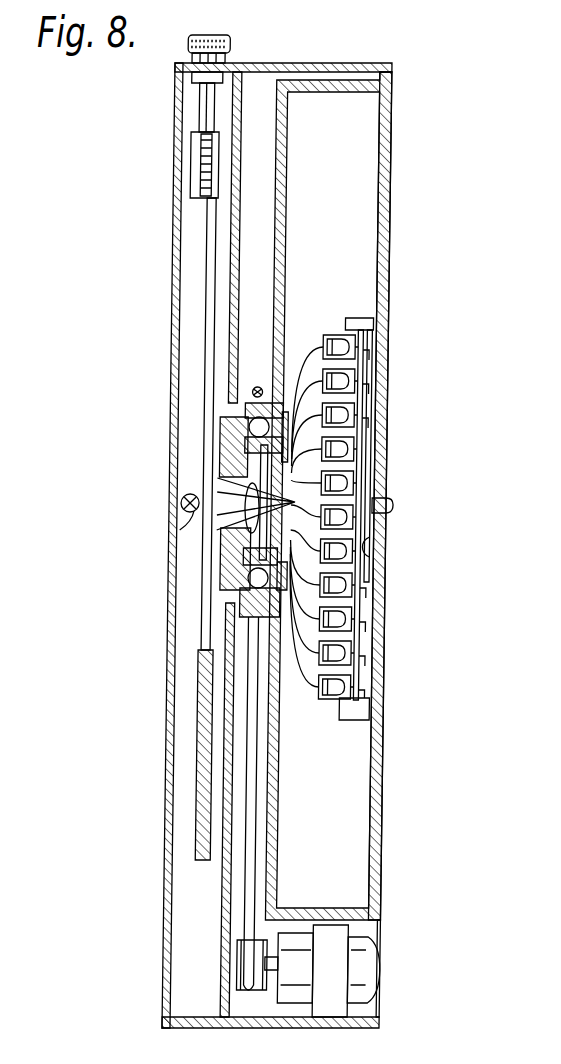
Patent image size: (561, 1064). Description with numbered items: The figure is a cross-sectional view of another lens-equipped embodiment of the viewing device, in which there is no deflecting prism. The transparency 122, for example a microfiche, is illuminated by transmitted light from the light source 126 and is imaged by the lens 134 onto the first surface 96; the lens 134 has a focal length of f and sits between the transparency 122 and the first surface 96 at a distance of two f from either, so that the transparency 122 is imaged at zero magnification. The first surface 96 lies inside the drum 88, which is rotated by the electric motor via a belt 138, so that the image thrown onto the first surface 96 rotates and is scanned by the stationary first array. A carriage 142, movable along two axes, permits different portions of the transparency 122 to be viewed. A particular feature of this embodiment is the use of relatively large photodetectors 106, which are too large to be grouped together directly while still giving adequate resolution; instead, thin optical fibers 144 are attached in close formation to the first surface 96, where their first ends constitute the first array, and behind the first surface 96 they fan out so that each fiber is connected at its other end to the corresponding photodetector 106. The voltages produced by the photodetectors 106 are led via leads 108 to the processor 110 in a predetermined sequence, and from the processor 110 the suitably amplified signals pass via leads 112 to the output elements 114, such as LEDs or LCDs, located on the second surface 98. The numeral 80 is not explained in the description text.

The housing 80 is at (178, 958).
The drum 88 is at (347, 880).
The first surface 96 is at (245, 548).
The second surface 98 is at (392, 857).
The photodetectors 106 is at (335, 335).
The leads 108 is at (371, 355).
The processor 110 is at (367, 610).
The leads 112 is at (377, 547).
The output elements 114 is at (397, 504).
The transparency 122 is at (223, 475).
The light source 126 is at (221, 532).
The lens 134 is at (262, 507).
The belt 138 is at (258, 388).
The carriage 142 is at (214, 254).
The optical fibers 144 is at (318, 470).